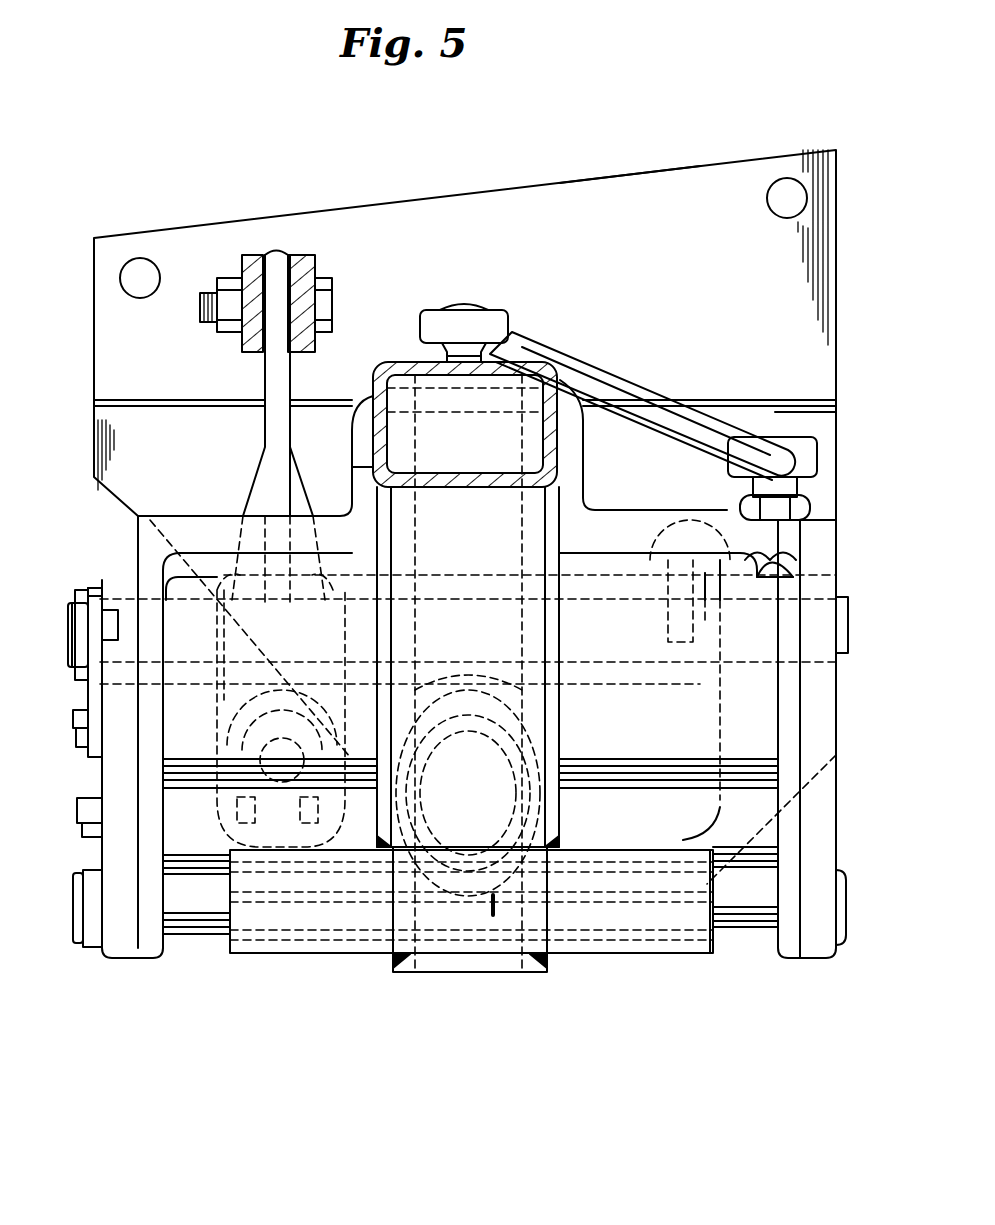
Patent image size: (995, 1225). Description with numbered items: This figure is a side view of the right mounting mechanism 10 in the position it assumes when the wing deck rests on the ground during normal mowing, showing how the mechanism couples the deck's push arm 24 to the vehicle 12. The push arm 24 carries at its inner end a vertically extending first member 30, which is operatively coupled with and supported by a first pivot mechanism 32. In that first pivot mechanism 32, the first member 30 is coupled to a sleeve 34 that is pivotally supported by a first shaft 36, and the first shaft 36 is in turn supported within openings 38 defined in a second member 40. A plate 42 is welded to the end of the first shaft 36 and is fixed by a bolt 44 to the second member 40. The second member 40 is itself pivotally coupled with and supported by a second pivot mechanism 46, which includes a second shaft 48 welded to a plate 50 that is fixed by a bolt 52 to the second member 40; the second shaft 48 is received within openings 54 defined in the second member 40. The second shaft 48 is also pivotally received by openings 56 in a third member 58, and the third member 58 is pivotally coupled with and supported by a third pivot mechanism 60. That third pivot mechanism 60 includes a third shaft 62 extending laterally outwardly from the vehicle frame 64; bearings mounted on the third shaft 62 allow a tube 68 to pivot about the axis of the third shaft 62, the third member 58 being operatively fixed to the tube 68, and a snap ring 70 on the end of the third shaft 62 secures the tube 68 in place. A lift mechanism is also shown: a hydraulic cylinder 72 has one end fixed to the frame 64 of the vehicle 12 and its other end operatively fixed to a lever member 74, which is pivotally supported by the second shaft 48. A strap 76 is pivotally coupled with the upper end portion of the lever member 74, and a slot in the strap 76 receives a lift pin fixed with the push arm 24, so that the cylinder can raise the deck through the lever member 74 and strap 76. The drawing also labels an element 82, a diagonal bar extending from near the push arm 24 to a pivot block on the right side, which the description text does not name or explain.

The mounting mechanism 10 is at (638, 998).
The vehicle 12 is at (403, 226).
The push arm 24 is at (518, 345).
The first member 30 is at (560, 500).
The first pivot mechanism 32 is at (200, 950).
The sleeve 34 is at (278, 953).
The first shaft 36 is at (175, 934).
The openings 38 is at (78, 926).
The second member 40 is at (100, 778).
The plate 42 is at (95, 840).
The bolt 44 is at (84, 808).
The second pivot mechanism 46 is at (70, 642).
The second shaft 48 is at (108, 578).
The plate 50 is at (80, 718).
The bolt 52 is at (82, 742).
The openings 54 is at (123, 608).
The openings 56 is at (737, 597).
The third member 58 is at (232, 595).
The third pivot mechanism 60 is at (493, 915).
The third shaft 62 is at (497, 720).
The vehicle frame 64 is at (630, 194).
The tube 68 is at (560, 736).
The snap ring 70 is at (546, 714).
The hydraulic cylinder 72 is at (343, 723).
The lever member 74 is at (265, 365).
The strap 76 is at (242, 268).
The lever 82 is at (603, 380).